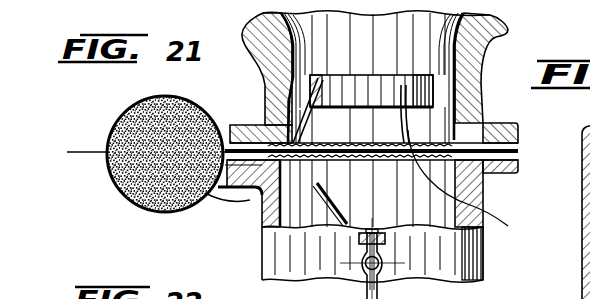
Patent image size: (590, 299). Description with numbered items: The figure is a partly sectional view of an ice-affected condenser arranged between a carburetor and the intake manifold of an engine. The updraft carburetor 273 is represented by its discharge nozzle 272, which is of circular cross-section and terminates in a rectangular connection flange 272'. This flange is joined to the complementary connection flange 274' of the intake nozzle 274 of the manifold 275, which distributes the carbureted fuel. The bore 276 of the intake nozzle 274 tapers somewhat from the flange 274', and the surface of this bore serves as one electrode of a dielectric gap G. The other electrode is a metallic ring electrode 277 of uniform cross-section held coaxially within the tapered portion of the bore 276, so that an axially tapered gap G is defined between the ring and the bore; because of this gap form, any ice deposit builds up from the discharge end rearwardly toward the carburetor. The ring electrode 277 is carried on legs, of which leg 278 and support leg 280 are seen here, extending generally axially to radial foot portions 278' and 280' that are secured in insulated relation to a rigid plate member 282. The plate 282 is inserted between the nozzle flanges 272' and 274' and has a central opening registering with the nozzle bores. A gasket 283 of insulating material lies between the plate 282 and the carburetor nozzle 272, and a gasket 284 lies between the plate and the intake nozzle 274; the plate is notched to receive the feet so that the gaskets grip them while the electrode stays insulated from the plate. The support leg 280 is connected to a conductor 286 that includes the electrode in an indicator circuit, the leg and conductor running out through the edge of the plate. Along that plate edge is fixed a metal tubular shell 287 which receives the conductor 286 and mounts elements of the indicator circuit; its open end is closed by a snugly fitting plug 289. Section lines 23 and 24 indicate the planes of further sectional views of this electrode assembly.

The section line 23- 23 is at (90, 153).
The plug 289 is at (138, 198).
The intake nozzle 274 is at (262, 78).
The connection flange 274' is at (261, 123).
The bore 276 is at (446, 93).
The dielectric gap G is at (453, 75).
The manifold 275 is at (503, 38).
The leg 278 is at (501, 141).
The discharge nozzle 272 is at (491, 193).
The connection flange 272' is at (250, 193).
The conductor 286 is at (215, 199).
The foot portion 280' is at (241, 211).
The gasket 284 is at (518, 146).
The plate member 282 is at (518, 151).
The gasket 283 is at (518, 162).
The ring electrode 277 is at (353, 81).
The support leg 280 is at (351, 110).
The foot portion 278' is at (473, 183).
The updraft carburetor 273 is at (485, 273).
The tubular shell 287 is at (584, 262).
The section line 24- 24 is at (559, 296).